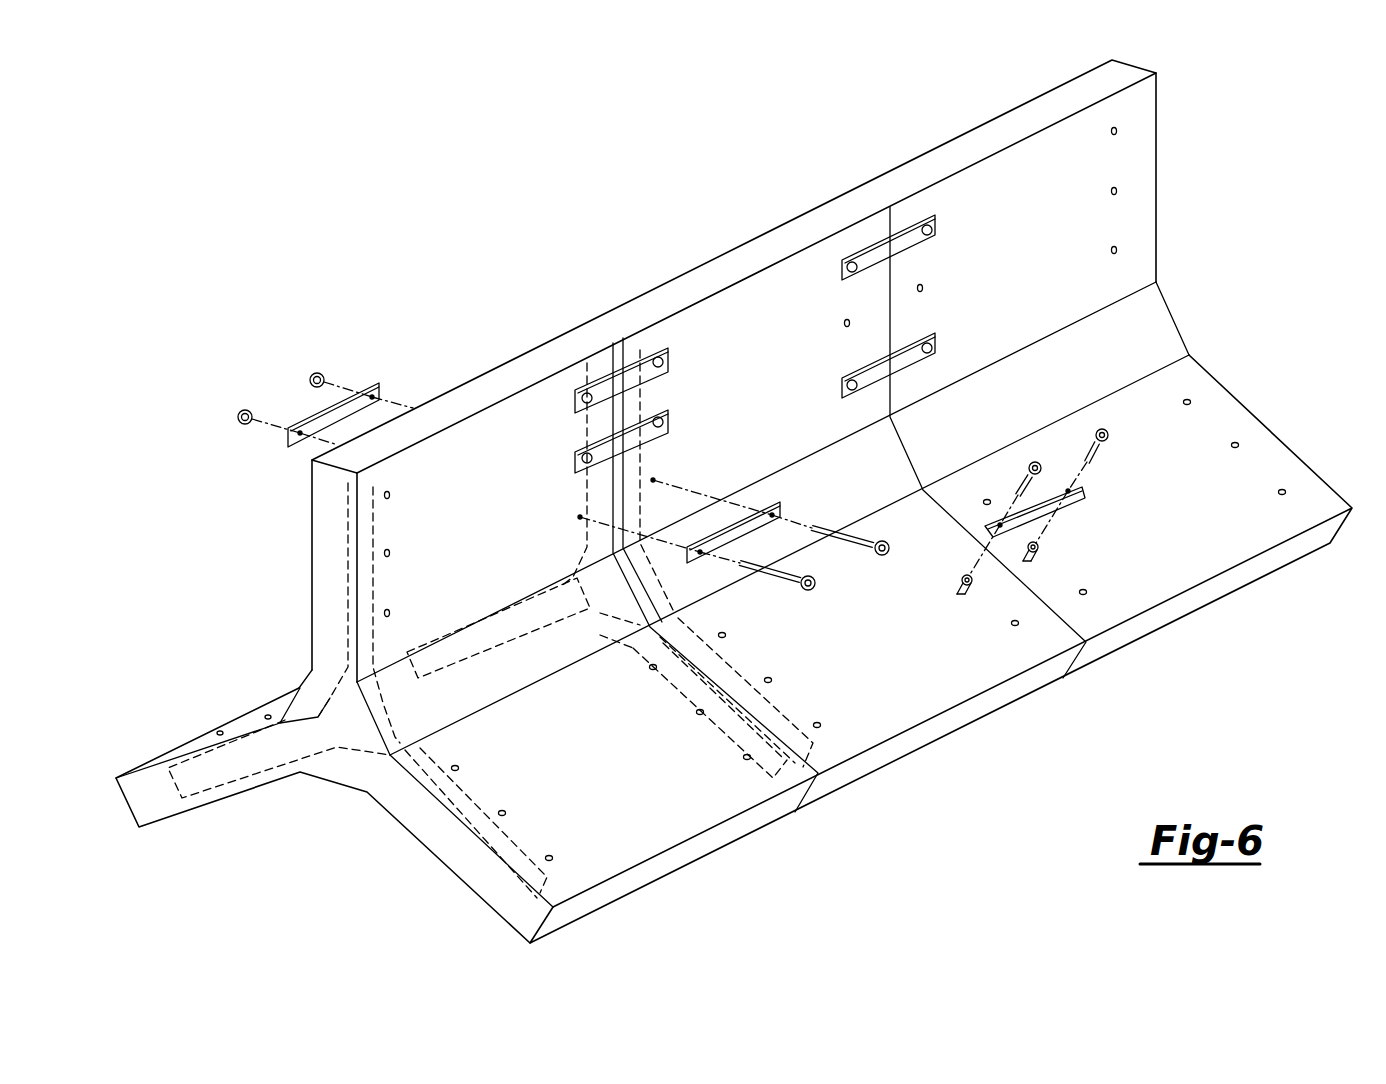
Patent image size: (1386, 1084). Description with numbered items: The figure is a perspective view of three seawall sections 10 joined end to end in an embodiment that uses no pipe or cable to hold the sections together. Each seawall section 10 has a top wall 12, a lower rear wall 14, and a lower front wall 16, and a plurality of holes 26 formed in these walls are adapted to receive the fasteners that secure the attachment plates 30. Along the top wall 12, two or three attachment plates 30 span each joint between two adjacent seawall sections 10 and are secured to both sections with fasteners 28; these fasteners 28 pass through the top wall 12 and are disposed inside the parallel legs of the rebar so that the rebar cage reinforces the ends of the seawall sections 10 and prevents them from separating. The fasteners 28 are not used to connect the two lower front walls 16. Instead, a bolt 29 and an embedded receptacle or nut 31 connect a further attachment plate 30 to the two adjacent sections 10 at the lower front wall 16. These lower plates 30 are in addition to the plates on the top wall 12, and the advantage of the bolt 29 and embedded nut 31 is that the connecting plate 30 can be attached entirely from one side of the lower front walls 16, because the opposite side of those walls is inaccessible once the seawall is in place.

The seawall section 10 is at (1222, 141).
The top wall 12 is at (712, 328).
The lower rear wall 14 is at (155, 793).
The lower front wall 16 is at (1183, 548).
The holes 26 is at (580, 517).
The fastener 28 is at (777, 583).
The bolt 29 is at (1107, 442).
The attachment plate 30 is at (345, 410).
The embedded nut 31 is at (1040, 555).